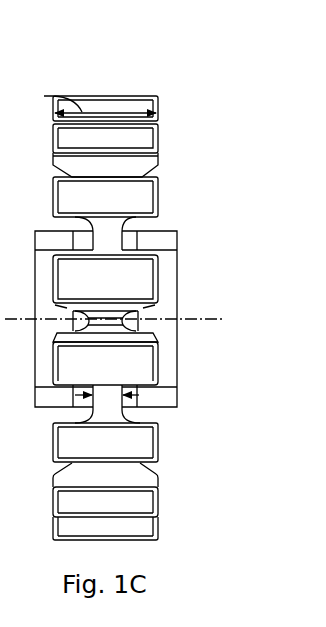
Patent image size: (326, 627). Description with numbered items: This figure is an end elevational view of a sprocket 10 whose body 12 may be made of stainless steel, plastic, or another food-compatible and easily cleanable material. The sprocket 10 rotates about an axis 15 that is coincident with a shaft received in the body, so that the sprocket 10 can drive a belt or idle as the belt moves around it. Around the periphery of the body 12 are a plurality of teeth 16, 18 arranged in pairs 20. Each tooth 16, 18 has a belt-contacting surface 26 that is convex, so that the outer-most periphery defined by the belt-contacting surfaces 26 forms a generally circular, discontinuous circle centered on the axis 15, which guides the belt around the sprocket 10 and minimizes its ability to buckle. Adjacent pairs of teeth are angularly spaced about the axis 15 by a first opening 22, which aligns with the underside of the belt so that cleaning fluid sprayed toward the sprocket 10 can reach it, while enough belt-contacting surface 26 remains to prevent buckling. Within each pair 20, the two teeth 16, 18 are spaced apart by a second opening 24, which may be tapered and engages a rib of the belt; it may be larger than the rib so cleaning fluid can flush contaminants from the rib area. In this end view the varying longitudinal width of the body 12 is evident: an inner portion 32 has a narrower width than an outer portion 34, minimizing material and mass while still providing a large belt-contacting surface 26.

The sprocket 10 is at (44, 44).
The body 12 is at (167, 271).
The axis 15 is at (220, 319).
The tooth 16 is at (160, 131).
The tooth 18 is at (160, 196).
The pair of teeth 20 is at (53, 361).
The first opening 22 is at (134, 222).
The second opening 24 is at (146, 318).
The belt-contacting surface 26 is at (105, 481).
The inner portion 32 is at (107, 412).
The outer portion 34 is at (126, 112).